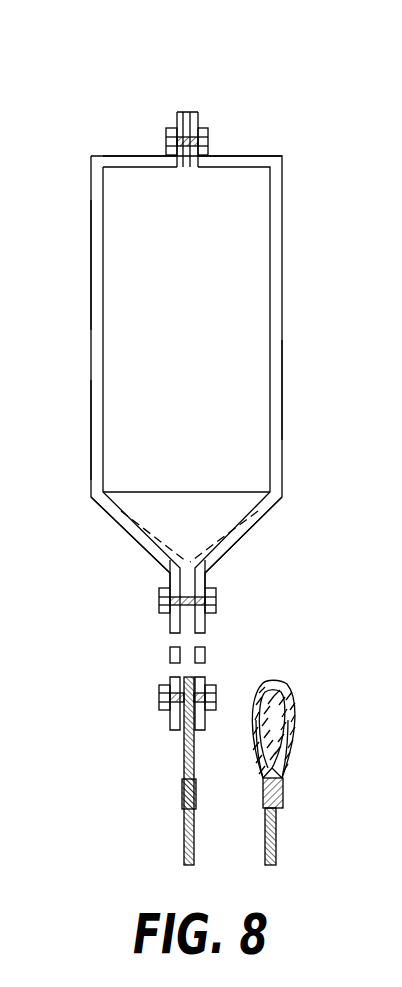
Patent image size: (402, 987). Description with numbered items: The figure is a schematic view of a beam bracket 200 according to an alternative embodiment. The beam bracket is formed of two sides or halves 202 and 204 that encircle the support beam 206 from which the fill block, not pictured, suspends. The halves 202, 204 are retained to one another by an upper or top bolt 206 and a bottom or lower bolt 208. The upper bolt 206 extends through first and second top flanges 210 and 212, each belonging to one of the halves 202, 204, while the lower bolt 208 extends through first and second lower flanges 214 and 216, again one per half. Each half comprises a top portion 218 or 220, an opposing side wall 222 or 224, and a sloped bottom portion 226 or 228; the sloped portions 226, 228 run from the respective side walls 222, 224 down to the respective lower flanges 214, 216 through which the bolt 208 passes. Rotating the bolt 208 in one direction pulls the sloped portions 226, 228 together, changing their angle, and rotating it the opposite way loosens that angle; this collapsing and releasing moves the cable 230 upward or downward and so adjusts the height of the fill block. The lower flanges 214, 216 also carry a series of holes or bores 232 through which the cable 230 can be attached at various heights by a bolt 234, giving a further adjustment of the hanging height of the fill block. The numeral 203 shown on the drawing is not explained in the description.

The beam bracket 200 is at (310, 122).
The first half 202 is at (282, 265).
The inlet port clamp 203 is at (168, 123).
The second half 204 is at (91, 280).
The support beam 206 is at (204, 327).
The lower bolt 208 is at (217, 602).
The first top flange 210 is at (193, 112).
The second top flange 212 is at (180, 112).
The first lower flange 214 is at (207, 578).
The second lower flange 216 is at (168, 577).
The top portion 218 is at (237, 155).
The top portion 220 is at (117, 155).
The side wall 222 is at (278, 383).
The side wall 224 is at (95, 433).
The sloped bottom portion 226 is at (253, 523).
The sloped bottom portion 228 is at (112, 517).
The cable 230 is at (183, 757).
The holes or bores 232 is at (210, 632).
The bolt 234 is at (160, 685).